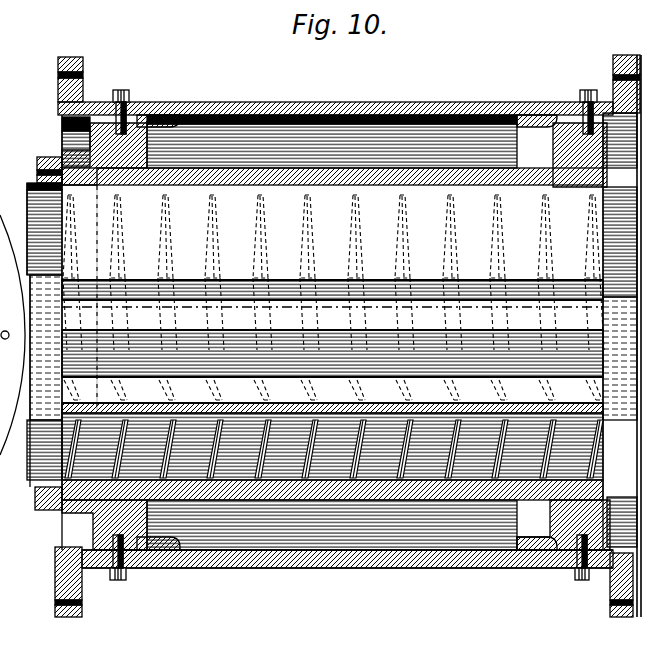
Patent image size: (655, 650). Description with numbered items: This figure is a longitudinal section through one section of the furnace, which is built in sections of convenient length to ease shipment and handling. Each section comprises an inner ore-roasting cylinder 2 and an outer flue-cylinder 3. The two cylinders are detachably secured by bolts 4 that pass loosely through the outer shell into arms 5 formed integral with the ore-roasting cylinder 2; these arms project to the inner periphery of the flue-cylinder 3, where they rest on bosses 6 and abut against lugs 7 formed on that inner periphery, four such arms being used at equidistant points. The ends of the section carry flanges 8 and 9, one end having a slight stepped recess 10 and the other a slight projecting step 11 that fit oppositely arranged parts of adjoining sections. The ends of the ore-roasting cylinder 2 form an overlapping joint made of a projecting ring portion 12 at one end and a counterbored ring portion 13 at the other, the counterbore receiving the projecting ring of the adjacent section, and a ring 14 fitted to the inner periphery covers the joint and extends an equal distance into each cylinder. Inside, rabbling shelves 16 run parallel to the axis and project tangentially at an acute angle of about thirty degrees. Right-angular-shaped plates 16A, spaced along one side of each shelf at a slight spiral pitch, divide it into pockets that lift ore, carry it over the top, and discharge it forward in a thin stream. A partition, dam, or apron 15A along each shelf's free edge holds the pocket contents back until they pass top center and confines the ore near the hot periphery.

The ore-roasting cylinder 2 is at (331, 184).
The flue-cylinder 3 is at (334, 566).
The bolts 4 is at (129, 101).
The arms 5 is at (110, 150).
The bosses 6 is at (91, 118).
The lugs 7 is at (172, 113).
The flange 8 is at (84, 63).
The flange 9 is at (614, 58).
The stepped recess 10 is at (58, 104).
The projecting step 11 is at (640, 56).
The projecting ring portion 12 is at (37, 163).
The counterbored ring portion 13 is at (594, 348).
The ring 14 is at (27, 210).
The partition, dam, or apron 15A is at (237, 318).
The shelves 16 is at (333, 297).
The right-angular-shaped plates 16A is at (255, 452).